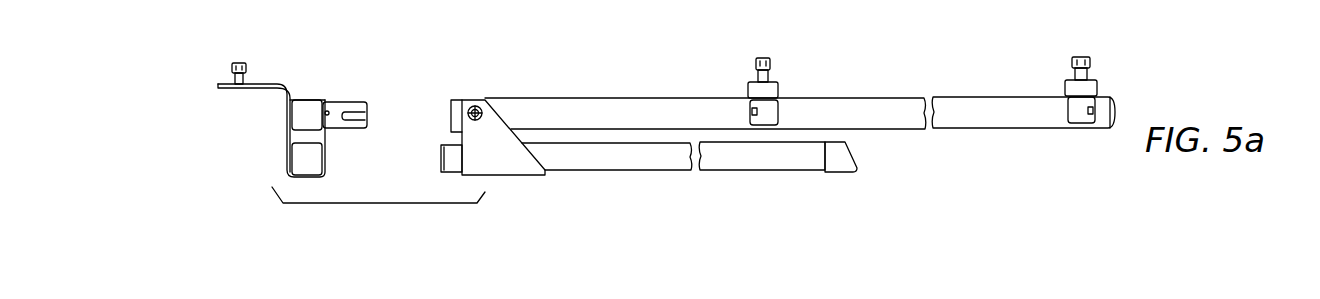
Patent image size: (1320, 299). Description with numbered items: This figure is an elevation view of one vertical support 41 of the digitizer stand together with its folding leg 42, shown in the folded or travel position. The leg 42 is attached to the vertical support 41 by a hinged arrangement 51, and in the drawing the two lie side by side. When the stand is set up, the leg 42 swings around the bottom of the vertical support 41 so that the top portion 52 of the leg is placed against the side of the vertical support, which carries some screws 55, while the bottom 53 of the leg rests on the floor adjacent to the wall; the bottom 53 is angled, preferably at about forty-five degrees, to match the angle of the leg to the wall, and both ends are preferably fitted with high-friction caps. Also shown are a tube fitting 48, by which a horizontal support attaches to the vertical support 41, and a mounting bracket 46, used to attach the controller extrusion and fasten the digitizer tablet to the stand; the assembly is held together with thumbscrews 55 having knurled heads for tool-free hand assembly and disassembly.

The vertical support 41 is at (808, 100).
The leg 42 is at (650, 168).
The mounting bracket 46 is at (291, 88).
The tube fitting 48 is at (350, 130).
The hinged arrangement 51 is at (481, 107).
The top portion of the leg 52 is at (440, 156).
The bottom of the leg 53 is at (857, 158).
The thumbscrews 55 is at (230, 67).